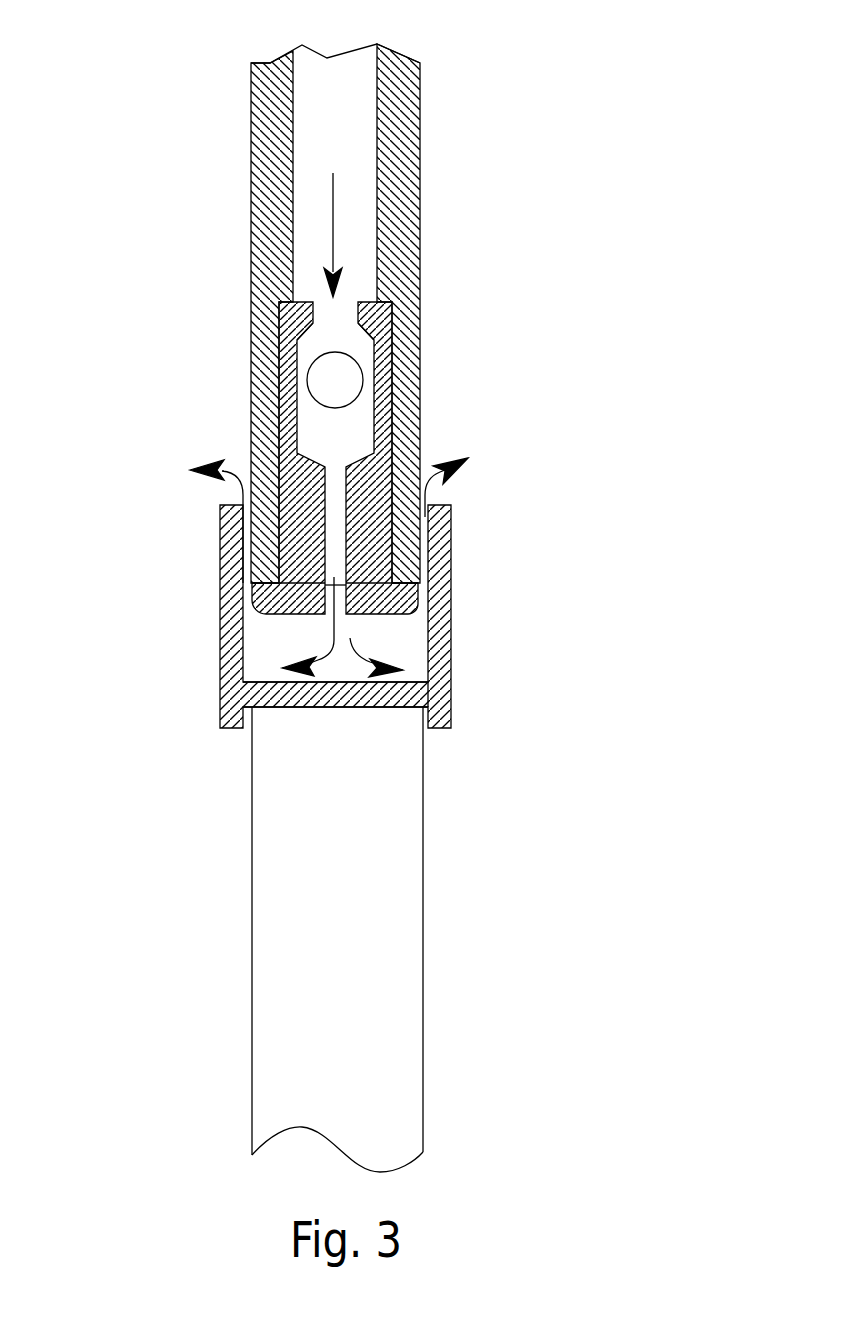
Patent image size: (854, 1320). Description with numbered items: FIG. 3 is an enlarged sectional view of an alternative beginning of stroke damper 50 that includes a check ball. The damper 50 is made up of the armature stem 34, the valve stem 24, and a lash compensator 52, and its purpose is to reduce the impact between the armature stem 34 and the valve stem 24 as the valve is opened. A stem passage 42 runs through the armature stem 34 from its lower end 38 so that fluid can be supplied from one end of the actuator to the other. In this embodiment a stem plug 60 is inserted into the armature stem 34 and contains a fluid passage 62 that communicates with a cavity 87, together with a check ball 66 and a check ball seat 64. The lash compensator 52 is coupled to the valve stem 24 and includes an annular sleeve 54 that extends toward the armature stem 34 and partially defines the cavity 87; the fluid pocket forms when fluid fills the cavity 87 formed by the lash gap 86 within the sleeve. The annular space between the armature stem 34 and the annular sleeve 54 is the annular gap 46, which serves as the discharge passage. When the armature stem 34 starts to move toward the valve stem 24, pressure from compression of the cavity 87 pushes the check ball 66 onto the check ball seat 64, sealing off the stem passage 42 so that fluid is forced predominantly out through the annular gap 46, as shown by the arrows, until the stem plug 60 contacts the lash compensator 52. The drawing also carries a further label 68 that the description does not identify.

The valve stem 24 is at (395, 882).
The armature stem 34 is at (412, 133).
The lower end 38 is at (267, 605).
The stem passage 42 is at (350, 87).
The annular gap 46 is at (412, 605).
The beginning of stroke damper 50 is at (185, 755).
The lash compensator 52 is at (450, 678).
The annular sleeve 54 is at (448, 652).
The stem plug 60 is at (300, 483).
The fluid passage 62 is at (334, 510).
The check ball seat 64 is at (318, 332).
The check ball 66 is at (338, 372).
The inflow path 68 is at (264, 642).
The lash gap 86 is at (410, 637).
The cavity 87 is at (417, 665).